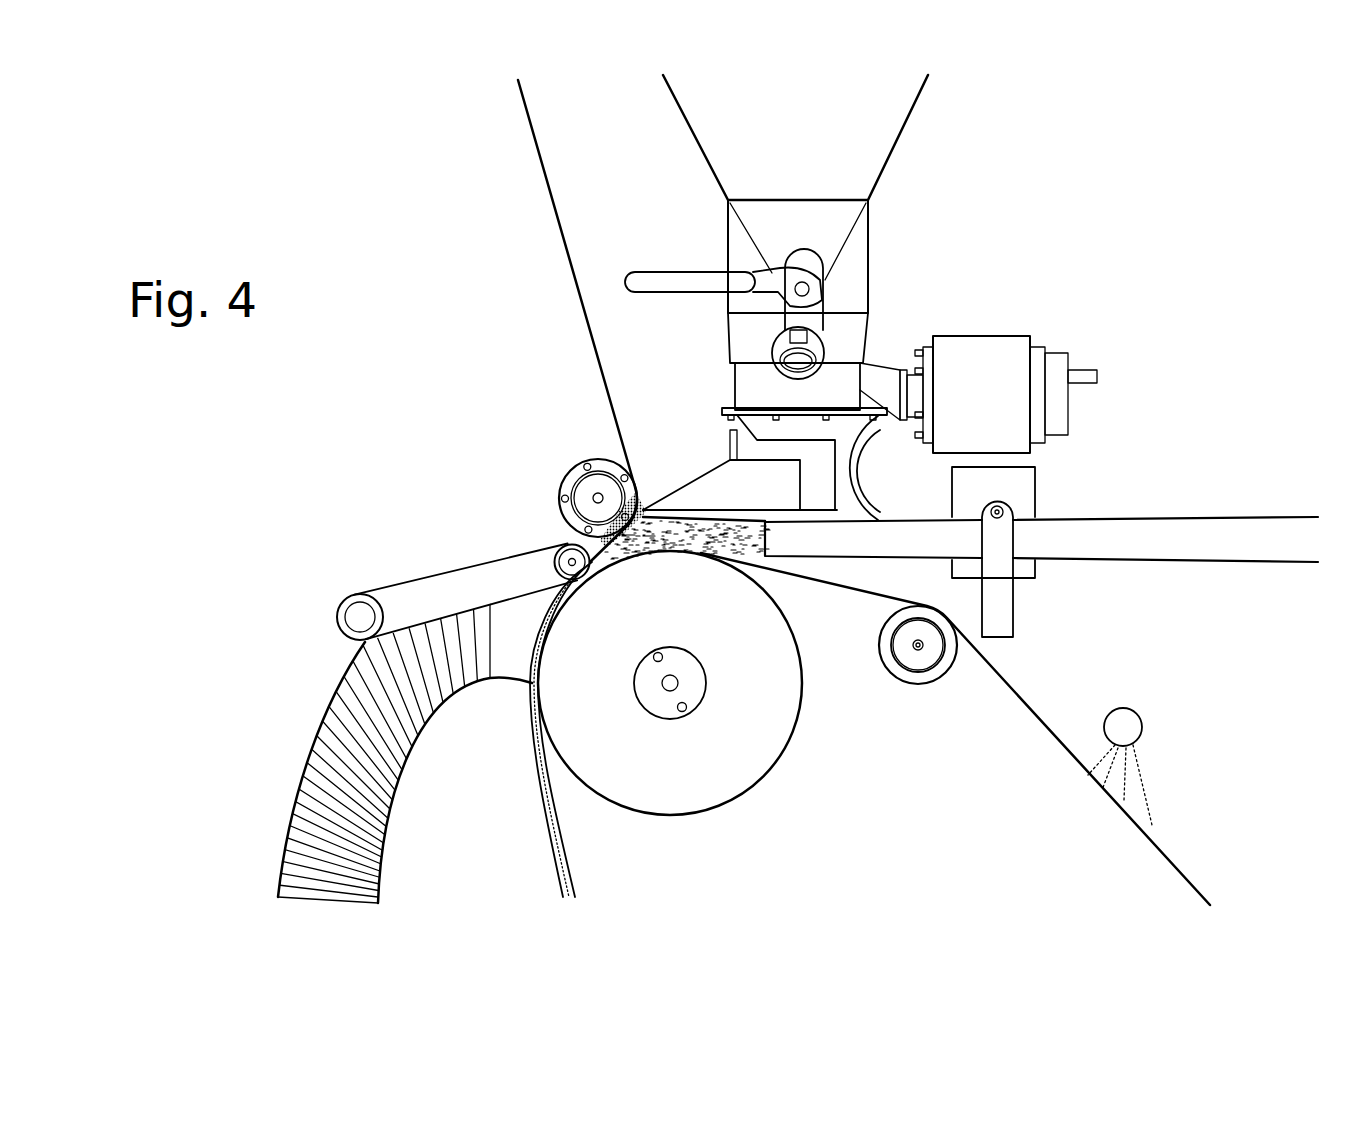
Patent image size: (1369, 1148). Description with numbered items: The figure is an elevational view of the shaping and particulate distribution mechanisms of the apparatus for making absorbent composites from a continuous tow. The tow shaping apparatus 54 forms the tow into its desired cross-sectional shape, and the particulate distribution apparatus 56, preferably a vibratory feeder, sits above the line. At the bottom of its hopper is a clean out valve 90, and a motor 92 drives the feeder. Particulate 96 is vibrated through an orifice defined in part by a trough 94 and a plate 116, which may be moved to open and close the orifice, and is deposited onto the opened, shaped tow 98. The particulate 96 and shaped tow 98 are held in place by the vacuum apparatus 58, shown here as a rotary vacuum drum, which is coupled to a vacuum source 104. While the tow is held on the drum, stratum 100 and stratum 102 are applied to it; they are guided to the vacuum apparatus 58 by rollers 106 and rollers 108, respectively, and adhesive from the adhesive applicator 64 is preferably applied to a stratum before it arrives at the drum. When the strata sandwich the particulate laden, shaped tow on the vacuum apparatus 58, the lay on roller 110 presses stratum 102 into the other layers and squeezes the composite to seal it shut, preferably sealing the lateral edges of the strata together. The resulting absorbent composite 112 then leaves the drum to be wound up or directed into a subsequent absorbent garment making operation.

The tow shaping apparatus 54 is at (1188, 528).
The particulate distribution apparatus 56 is at (777, 127).
The vacuum apparatus 58 is at (690, 772).
The adhesive applicator 64 is at (1118, 718).
The clean out valve 90 is at (812, 317).
The motor 92 is at (997, 407).
The trough 94 is at (759, 498).
The particulate 96 is at (645, 510).
The shaped tow 98 is at (767, 557).
The stratum 100 is at (1128, 815).
The stratum 102 is at (568, 272).
The vacuum source 104 is at (290, 830).
The guide rollers 106 is at (923, 660).
The guide rollers 108 is at (578, 506).
The lay on roller 110 is at (557, 547).
The absorbent composite 112 is at (577, 860).
The plate 116 is at (730, 457).